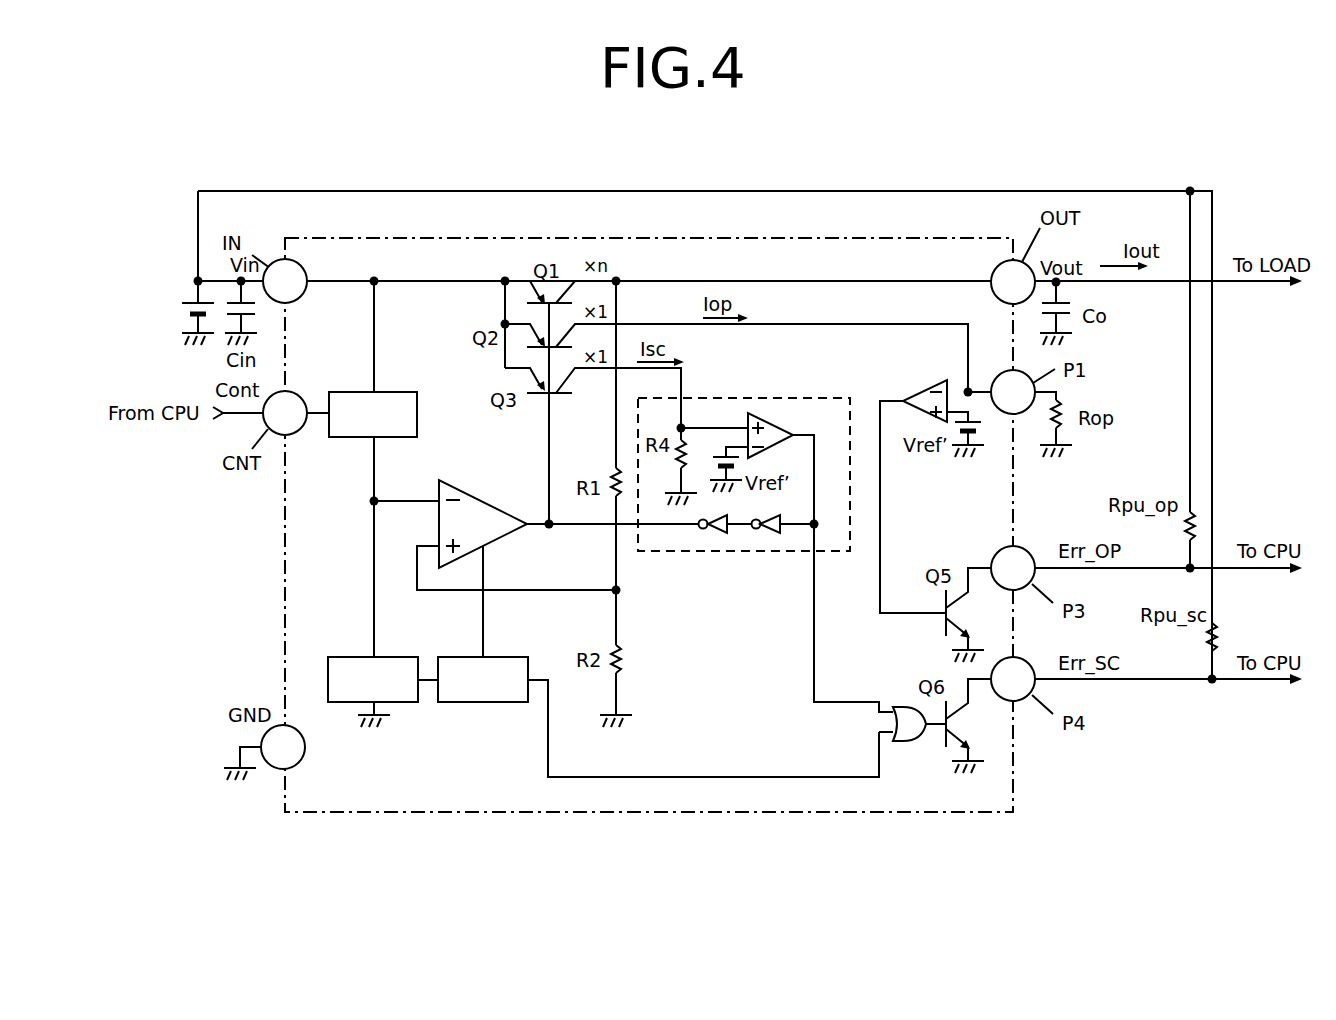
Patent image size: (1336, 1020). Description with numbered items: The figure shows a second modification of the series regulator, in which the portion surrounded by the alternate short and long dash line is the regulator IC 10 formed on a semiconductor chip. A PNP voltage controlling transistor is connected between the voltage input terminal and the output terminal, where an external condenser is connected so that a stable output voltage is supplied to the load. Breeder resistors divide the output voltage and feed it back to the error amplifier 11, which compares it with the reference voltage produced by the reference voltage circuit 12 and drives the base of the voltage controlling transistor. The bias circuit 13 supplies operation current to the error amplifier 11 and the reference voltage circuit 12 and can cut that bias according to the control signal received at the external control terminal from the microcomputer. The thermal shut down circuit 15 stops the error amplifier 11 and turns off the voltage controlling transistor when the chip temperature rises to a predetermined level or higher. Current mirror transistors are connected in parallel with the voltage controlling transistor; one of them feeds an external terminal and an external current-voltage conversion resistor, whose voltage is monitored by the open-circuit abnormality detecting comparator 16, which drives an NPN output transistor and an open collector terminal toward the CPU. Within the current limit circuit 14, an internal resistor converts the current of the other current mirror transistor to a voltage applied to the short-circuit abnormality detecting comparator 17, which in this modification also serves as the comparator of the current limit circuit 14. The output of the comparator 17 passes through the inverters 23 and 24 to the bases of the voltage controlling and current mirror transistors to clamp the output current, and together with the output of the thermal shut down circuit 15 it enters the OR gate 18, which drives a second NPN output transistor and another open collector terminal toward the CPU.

The regulator IC 10 is at (640, 237).
The error amplifier 11 is at (470, 495).
The reference voltage circuit 12 is at (357, 657).
The bias circuit 13 is at (388, 392).
The current limit circuit 14 is at (757, 397).
The thermal shut down circuit 15 is at (470, 703).
The open-circuit abnormality detecting comparator 16 is at (918, 394).
The short-circuit abnormality detecting comparator 17 is at (772, 412).
The OR gate 18 is at (905, 742).
The inverter 23 is at (772, 536).
The inverter 24 is at (716, 536).